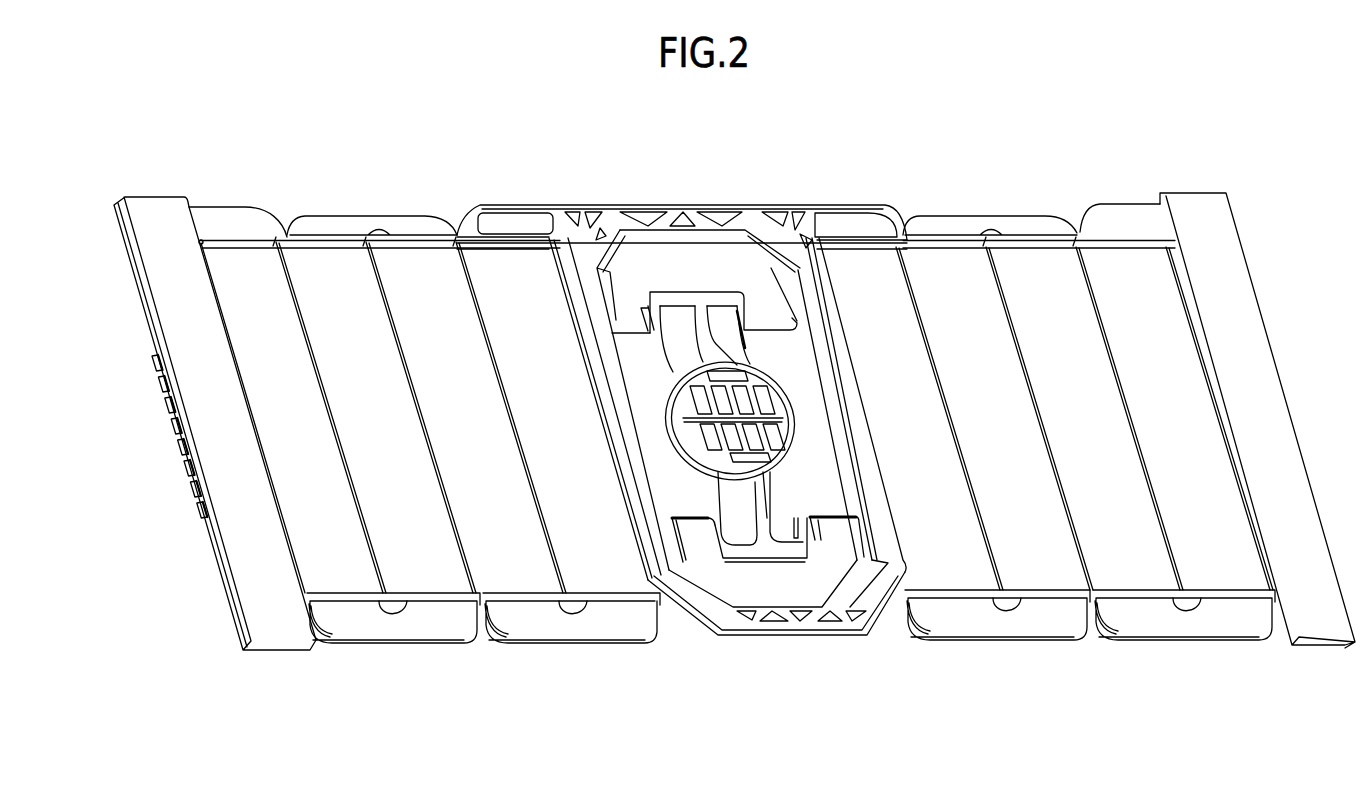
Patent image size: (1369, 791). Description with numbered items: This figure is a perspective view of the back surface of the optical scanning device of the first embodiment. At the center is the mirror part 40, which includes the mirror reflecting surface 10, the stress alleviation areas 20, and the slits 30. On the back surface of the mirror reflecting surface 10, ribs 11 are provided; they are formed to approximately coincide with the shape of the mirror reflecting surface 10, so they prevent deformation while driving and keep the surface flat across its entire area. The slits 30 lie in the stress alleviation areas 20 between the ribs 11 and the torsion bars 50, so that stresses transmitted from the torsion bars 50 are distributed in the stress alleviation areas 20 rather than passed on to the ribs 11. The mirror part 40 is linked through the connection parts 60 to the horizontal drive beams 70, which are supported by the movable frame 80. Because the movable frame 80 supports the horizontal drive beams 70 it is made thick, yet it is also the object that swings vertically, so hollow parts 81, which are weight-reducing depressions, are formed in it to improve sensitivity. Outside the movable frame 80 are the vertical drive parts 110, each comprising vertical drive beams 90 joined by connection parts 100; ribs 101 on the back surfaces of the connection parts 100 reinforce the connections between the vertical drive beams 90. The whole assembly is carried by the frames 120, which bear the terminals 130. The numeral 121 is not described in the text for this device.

The mirror reflecting surface 10 is at (424, 425).
The ribs 11 is at (712, 522).
The stress alleviation areas 20 is at (717, 466).
The slits 30 is at (762, 505).
The mirror part 40 is at (709, 466).
The torsion bars 50 is at (712, 350).
The connection parts 60 is at (788, 552).
The horizontal drive beams 70 is at (685, 488).
The movable frame 80 is at (833, 523).
The hollow parts 81 is at (850, 620).
The vertical drive beams 90 is at (1032, 560).
The connection parts 100 is at (975, 617).
The ribs 101 is at (1184, 661).
The vertical drive parts 110 is at (1085, 488).
The frames 120 is at (243, 572).
The end plate 121 is at (1257, 420).
The terminals 130 is at (172, 426).